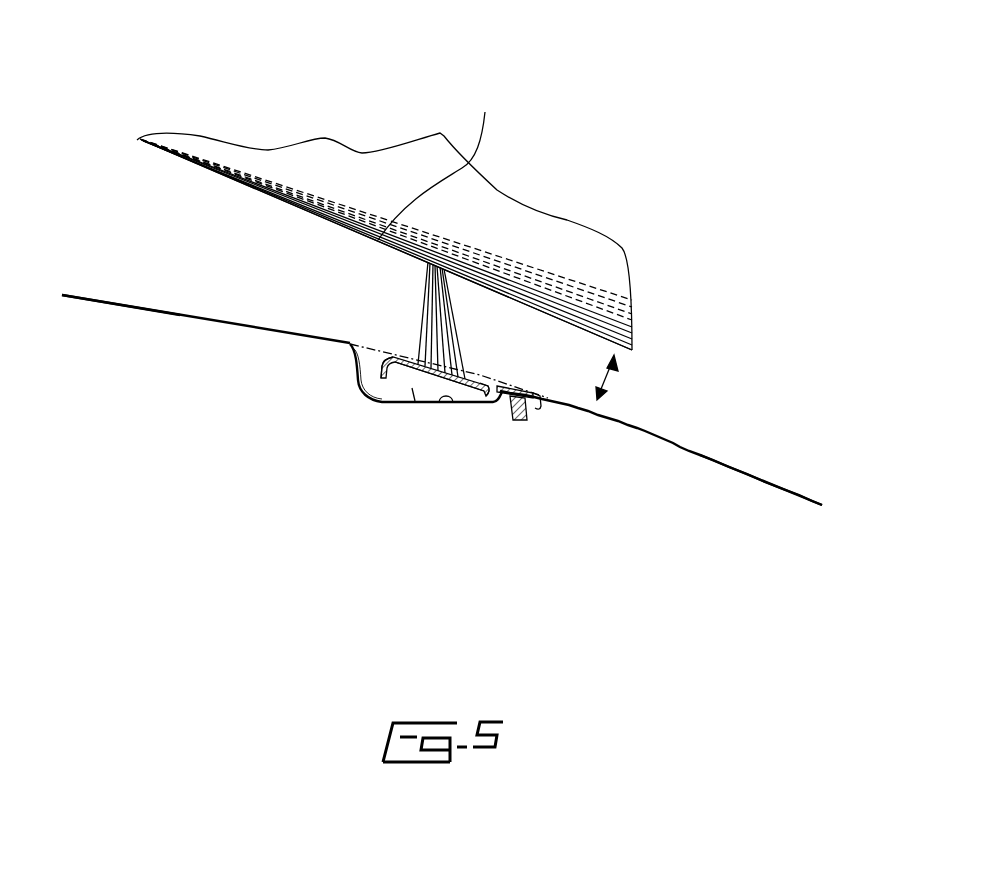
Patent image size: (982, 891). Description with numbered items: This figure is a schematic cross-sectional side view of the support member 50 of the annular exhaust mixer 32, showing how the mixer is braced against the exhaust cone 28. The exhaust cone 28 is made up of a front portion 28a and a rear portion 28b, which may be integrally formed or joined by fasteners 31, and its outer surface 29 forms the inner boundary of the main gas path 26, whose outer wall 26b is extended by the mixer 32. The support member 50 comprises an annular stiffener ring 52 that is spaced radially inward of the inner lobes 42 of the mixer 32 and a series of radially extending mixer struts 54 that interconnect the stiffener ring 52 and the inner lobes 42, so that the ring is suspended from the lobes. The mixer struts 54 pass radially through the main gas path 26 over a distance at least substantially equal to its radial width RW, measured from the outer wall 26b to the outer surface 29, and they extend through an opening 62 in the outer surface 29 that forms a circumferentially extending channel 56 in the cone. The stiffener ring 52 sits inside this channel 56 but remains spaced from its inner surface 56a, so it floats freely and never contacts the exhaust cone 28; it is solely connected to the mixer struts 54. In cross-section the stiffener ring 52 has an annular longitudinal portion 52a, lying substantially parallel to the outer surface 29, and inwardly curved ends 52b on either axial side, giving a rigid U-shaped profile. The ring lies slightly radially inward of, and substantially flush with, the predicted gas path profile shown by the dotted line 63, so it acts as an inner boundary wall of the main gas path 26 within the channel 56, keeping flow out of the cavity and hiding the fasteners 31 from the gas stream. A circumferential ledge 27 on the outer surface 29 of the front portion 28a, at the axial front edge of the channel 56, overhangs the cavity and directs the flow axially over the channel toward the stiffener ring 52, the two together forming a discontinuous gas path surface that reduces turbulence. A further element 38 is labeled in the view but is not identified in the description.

The main gas path 26 is at (273, 268).
The outer wall of the main gas path 26b is at (441, 164).
The circumferential ledge 27 is at (353, 378).
The exhaust cone 28 is at (632, 430).
The front portion of the exhaust cone 28a is at (180, 314).
The rear portion of the exhaust cone 28b is at (684, 450).
The outer surface of the exhaust cone 29 is at (300, 342).
The fasteners 31 is at (540, 408).
The exhaust mixer 32 is at (383, 128).
The mounting bracket 38 is at (515, 390).
The inner lobes 42 is at (557, 247).
The support member 50 is at (385, 313).
The stiffener ring 52 is at (462, 392).
The longitudinal portion of the stiffener ring 52a is at (440, 378).
The radially curved ends of the stiffener ring 52b is at (384, 378).
The mixer struts 54 is at (420, 297).
The channel 56 is at (412, 390).
The inner surface of the channel 56a is at (450, 402).
The opening 62 is at (508, 372).
The predicted gas path profile 63 is at (632, 332).
The radial width of the main gas path RW is at (607, 378).